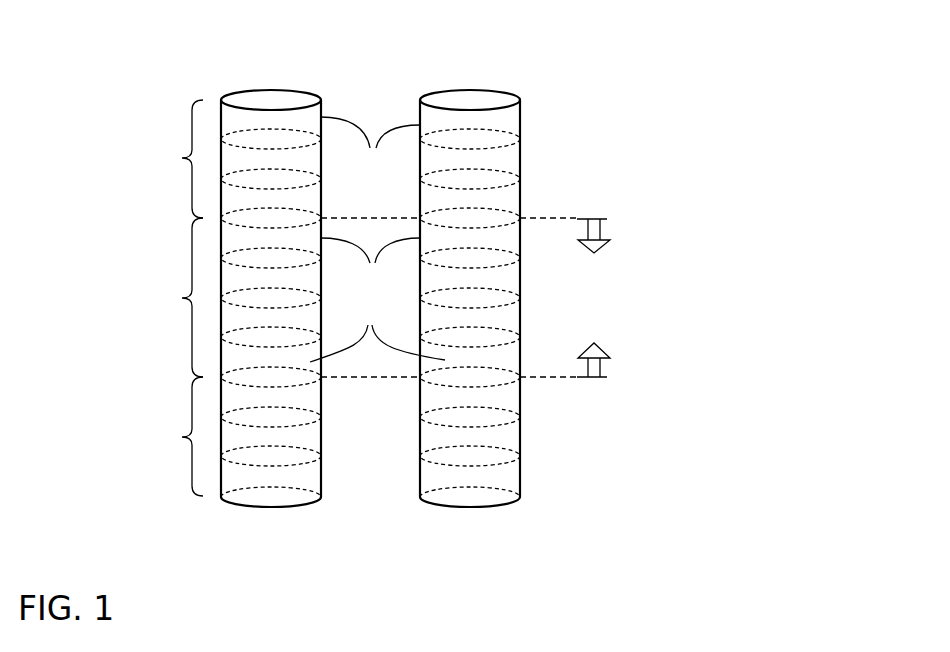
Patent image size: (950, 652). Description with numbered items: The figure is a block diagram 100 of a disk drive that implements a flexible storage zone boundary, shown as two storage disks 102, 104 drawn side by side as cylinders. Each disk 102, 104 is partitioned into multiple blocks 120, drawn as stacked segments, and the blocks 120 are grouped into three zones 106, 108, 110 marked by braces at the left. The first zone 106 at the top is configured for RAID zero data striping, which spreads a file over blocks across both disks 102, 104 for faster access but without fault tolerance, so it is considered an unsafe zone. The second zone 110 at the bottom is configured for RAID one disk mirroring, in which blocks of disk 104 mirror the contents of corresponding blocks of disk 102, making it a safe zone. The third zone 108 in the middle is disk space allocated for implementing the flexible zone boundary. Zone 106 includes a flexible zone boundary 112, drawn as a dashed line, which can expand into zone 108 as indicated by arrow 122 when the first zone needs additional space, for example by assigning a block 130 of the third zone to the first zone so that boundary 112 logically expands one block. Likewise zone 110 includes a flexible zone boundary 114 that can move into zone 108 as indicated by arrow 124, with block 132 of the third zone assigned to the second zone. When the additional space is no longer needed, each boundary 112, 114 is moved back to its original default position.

The block diagram 100 is at (866, 80).
The disk 102 is at (271, 74).
The disk 104 is at (469, 68).
The zone 1 106 is at (131, 159).
The zone 3 108 is at (118, 297).
The zone 2 110 is at (127, 436).
The flexible zone boundary 112 is at (546, 219).
The flexible zone boundary 114 is at (547, 378).
The blocks 120 is at (370, 142).
The arrow 122 is at (598, 253).
The arrow 124 is at (599, 343).
The block 130 is at (370, 261).
The block 132 is at (377, 333).